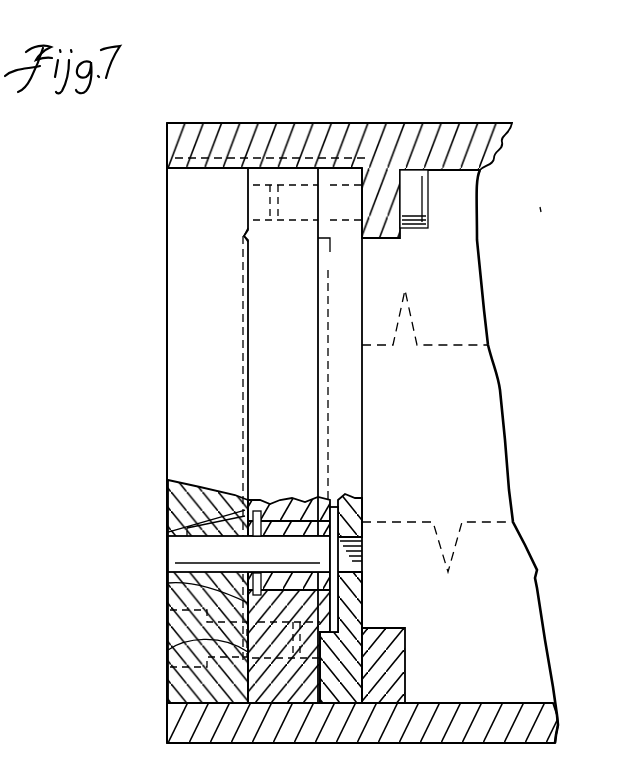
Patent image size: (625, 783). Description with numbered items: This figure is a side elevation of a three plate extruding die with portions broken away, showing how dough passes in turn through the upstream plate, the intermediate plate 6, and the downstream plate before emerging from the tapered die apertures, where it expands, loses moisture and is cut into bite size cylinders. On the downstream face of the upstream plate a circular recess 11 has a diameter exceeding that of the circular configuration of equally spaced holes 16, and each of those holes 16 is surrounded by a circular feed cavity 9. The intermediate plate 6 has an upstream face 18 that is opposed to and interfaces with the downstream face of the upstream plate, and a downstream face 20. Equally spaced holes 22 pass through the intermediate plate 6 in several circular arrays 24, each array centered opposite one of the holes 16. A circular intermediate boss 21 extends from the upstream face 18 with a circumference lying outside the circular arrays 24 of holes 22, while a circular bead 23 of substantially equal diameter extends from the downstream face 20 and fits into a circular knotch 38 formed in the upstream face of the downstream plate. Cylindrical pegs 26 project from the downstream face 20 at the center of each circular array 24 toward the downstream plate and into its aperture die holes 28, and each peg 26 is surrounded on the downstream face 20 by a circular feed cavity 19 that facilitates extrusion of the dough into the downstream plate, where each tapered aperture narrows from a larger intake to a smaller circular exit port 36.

The intermediate plate 6 is at (303, 170).
The circular feed cavity 9 is at (340, 507).
The circular recess 11 is at (330, 252).
The holes 16 is at (366, 546).
The upstream face 18 is at (323, 163).
The circular feed cavity 19 is at (168, 539).
The downstream face 20 is at (248, 190).
The circular intermediate boss 21 is at (335, 610).
The holes 22 is at (261, 511).
The circular bead 23 is at (245, 233).
The circular arrays 24 is at (293, 510).
The cylindrical pegs 26 is at (186, 527).
The aperture die holes 28 is at (190, 591).
The circular exit port 36 is at (168, 583).
The circular knotch 38 is at (168, 651).